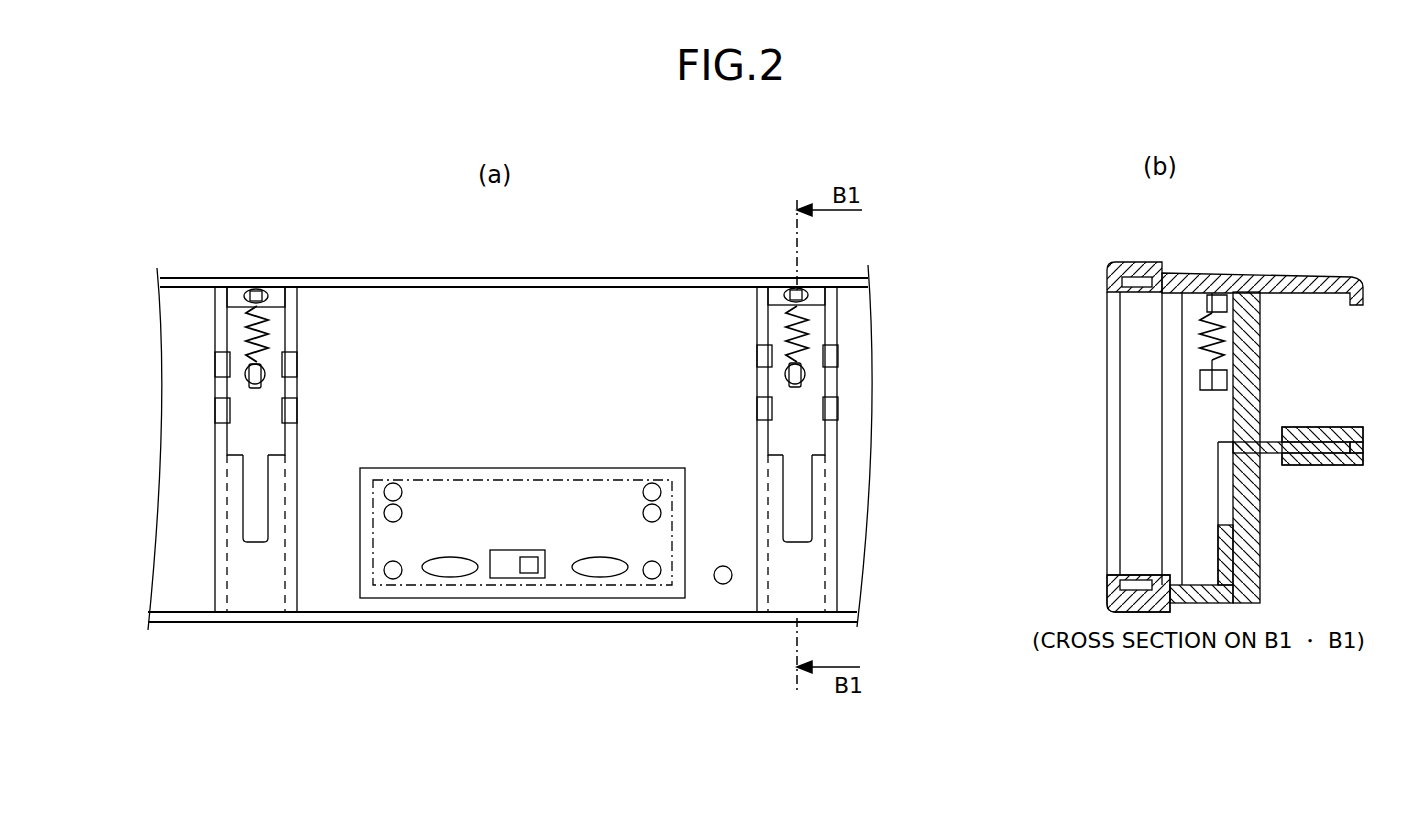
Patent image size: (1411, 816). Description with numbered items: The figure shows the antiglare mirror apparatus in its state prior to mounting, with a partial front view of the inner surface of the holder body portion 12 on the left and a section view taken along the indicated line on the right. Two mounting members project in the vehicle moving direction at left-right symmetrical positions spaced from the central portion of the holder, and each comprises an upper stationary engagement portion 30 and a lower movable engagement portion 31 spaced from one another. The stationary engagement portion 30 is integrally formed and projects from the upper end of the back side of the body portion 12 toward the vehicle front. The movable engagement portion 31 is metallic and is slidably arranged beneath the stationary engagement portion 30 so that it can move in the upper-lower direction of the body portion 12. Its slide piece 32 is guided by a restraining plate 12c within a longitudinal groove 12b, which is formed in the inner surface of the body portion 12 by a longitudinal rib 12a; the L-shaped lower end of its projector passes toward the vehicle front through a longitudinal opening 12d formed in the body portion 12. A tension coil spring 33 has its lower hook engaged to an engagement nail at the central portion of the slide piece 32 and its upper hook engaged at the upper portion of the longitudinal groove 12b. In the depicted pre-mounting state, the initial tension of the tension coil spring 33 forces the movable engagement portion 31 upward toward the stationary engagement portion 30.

The body portion 12 is at (845, 270).
The longitudinal rib 12a is at (757, 323).
The longitudinal groove 12b is at (235, 297).
The restraining plate 12c is at (293, 408).
The longitudinal opening 12d is at (800, 508).
The stationary engagement portion 30 is at (1290, 272).
The movable engagement portion 31 is at (1367, 432).
The slide piece 32 is at (803, 438).
The tension coil spring 33 is at (265, 327).